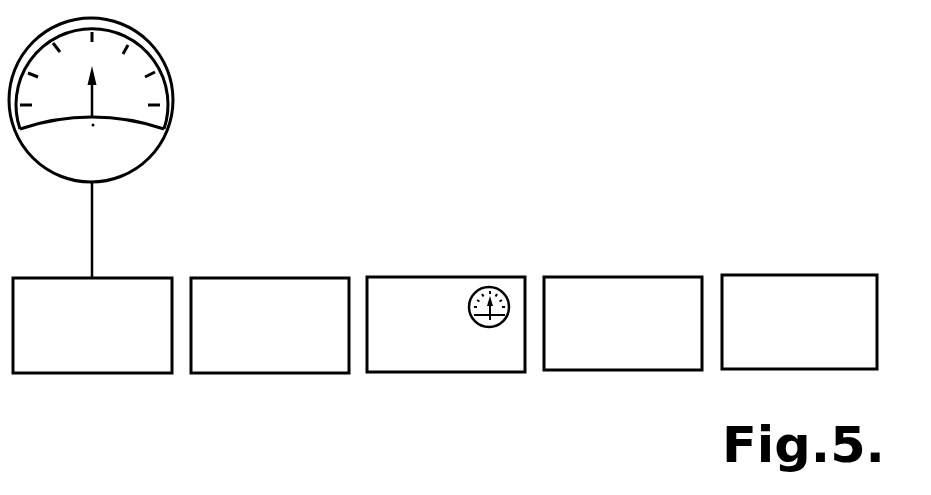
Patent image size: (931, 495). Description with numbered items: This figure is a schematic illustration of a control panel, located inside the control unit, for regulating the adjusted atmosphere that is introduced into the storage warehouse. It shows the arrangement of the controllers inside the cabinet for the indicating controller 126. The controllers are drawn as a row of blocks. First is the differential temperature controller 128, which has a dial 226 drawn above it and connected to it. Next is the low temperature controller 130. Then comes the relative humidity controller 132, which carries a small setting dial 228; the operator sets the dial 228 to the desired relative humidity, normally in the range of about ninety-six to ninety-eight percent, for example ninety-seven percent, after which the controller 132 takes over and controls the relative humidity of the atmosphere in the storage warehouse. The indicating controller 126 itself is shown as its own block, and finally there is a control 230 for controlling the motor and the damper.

The dial 226 is at (152, 88).
The differential temperature controller 128 is at (116, 340).
The low temperature controller 130 is at (296, 340).
The relative humidity controller 132 is at (447, 339).
The indicating controller 126 is at (649, 339).
The control 230 is at (830, 338).
The setting dial 228 is at (493, 287).